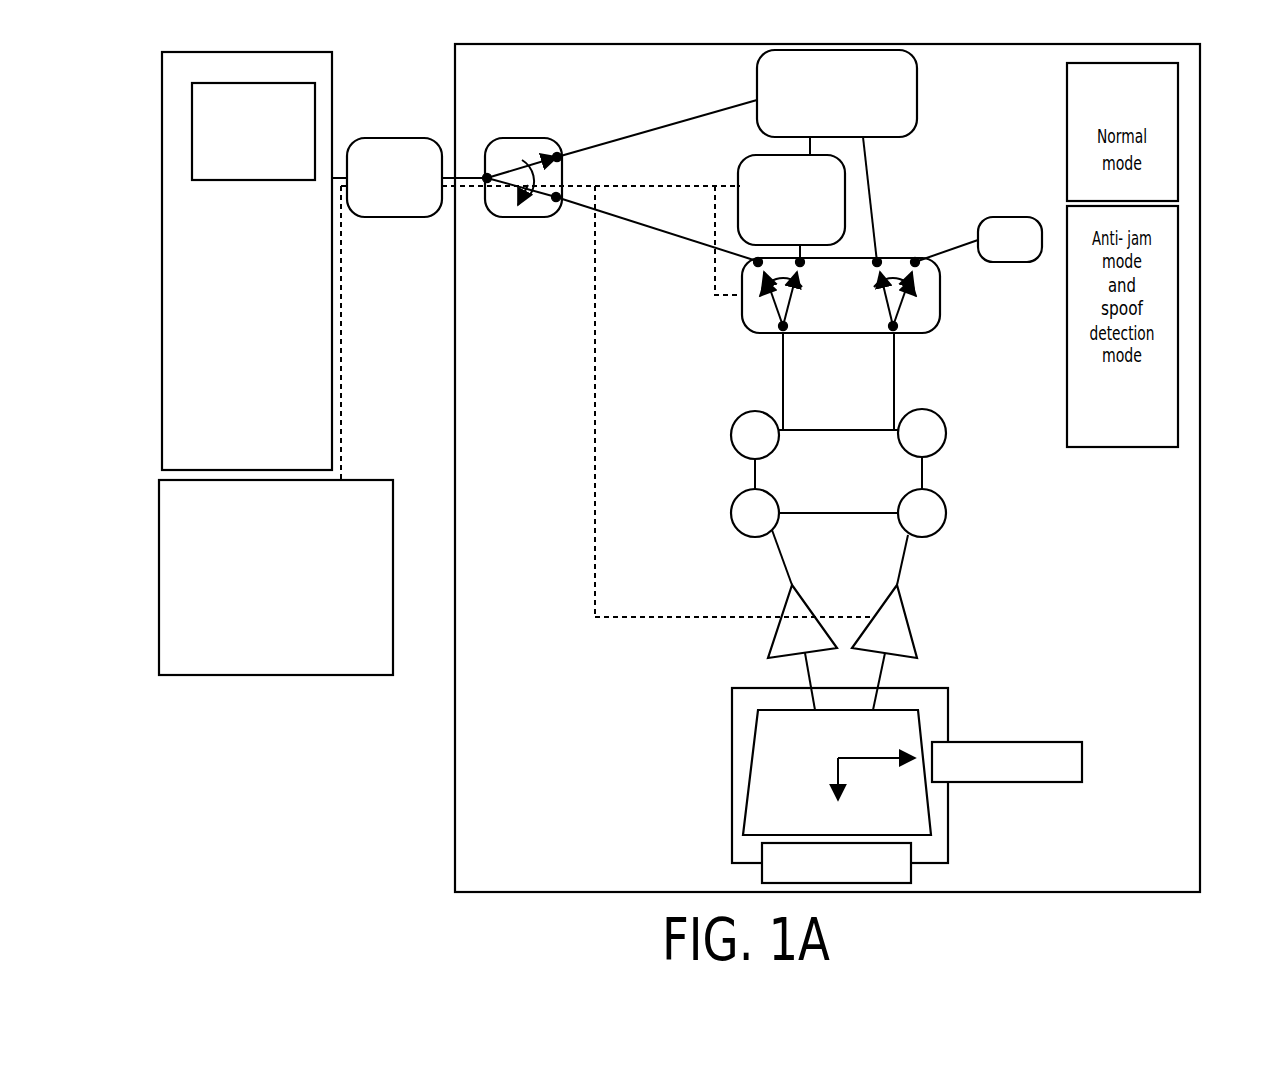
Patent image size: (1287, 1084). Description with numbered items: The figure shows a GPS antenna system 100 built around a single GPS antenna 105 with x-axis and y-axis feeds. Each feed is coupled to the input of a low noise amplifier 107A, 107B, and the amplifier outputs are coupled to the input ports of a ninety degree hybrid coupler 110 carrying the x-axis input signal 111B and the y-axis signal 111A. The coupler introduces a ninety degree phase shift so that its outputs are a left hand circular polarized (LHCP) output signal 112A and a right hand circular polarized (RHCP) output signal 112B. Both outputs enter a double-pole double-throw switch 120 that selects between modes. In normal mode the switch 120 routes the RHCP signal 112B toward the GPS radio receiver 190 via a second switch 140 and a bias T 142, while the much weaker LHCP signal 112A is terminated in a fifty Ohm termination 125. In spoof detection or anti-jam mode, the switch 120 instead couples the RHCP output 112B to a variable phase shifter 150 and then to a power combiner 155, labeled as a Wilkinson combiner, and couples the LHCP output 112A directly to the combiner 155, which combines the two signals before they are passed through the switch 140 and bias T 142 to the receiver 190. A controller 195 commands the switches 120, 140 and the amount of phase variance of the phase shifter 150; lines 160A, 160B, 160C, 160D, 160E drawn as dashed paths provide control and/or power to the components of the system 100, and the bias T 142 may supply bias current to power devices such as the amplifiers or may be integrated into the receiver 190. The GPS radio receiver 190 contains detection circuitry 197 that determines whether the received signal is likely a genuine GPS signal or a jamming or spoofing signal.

The GPS antenna system 100 is at (827, 468).
The GPS antenna 105 is at (950, 725).
The low noise amplifier 107A is at (770, 648).
The low noise amplifier 107B is at (912, 637).
The 90 degree hybrid coupler 110 is at (926, 470).
The y-axis signal 111A is at (903, 570).
The x-axis input signal 111B is at (782, 560).
The LHCP output signal 112A is at (894, 405).
The RHCP output signal 112B is at (783, 430).
The switch 120 is at (940, 318).
The termination 125 is at (1008, 262).
The switch 140 is at (512, 138).
The bias T 142 is at (385, 217).
The variable phase shifter 150 is at (768, 158).
The power combiner 155 is at (902, 137).
The line 160A is at (341, 405).
The line 160B is at (595, 490).
The line 160C is at (835, 617).
The line 160D is at (582, 186).
The line 160E is at (715, 295).
The GPS radio receiver 190 is at (247, 261).
The controller 195 is at (276, 577).
The detection circuitry 197 is at (253, 131).